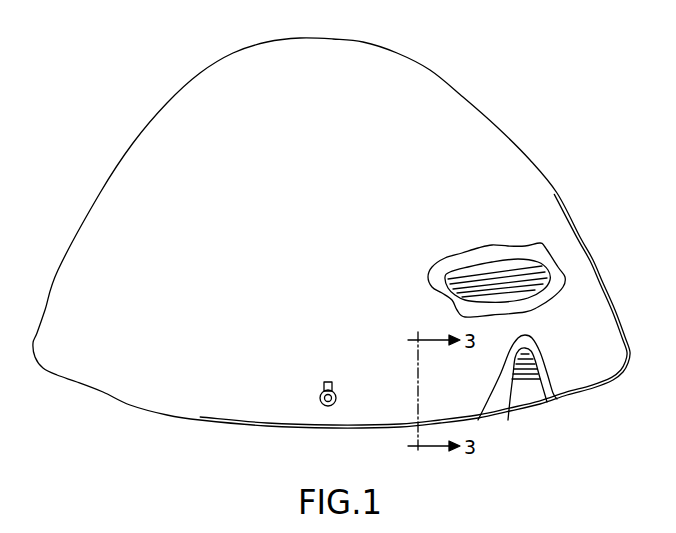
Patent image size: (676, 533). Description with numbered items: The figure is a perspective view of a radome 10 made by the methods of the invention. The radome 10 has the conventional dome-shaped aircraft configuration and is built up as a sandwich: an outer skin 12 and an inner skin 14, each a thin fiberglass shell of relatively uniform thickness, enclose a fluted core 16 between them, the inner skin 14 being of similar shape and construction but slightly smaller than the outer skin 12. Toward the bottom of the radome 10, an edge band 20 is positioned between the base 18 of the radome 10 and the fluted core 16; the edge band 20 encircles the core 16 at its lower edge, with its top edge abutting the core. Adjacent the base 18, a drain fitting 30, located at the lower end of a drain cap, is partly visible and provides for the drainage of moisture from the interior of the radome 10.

The radome 10 is at (398, 92).
The outer skin 12 is at (538, 252).
The inner skin 14 is at (527, 297).
The fluted core 16 is at (532, 280).
The base 18 is at (147, 411).
The edge band 20 is at (523, 398).
The drain fitting 30 is at (336, 398).